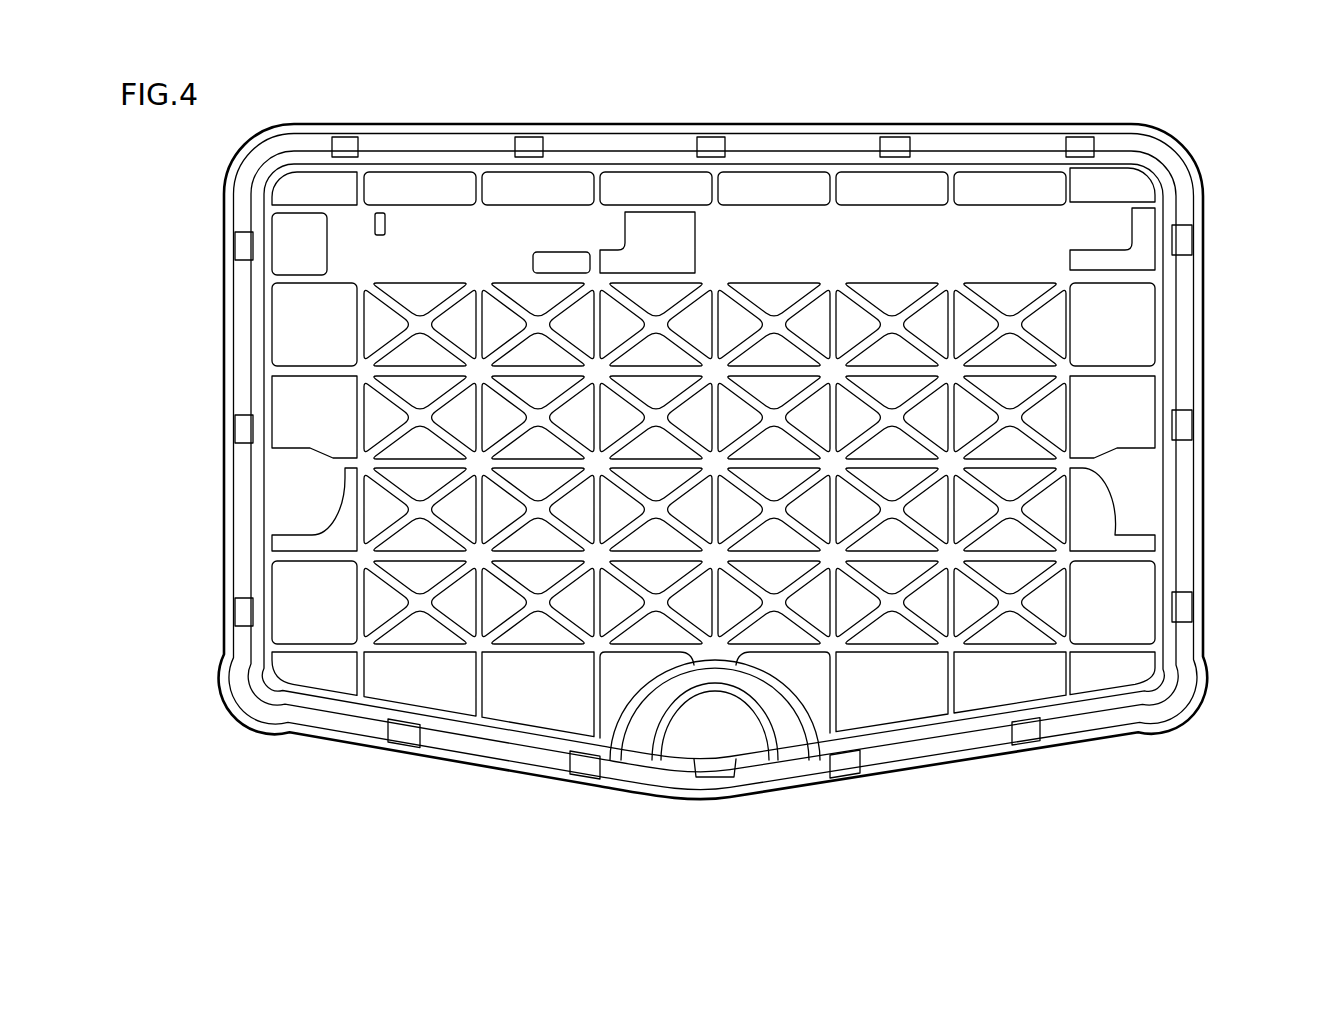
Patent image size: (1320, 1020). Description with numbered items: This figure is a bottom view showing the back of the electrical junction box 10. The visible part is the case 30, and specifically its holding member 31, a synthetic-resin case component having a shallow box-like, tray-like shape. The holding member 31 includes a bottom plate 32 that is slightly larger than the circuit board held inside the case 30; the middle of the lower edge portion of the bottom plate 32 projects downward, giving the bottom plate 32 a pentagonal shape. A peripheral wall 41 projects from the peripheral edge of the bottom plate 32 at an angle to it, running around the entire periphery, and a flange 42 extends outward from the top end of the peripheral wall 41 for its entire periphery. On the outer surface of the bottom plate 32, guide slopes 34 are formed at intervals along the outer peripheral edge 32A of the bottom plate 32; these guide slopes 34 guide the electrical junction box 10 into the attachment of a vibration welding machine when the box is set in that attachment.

The electrical junction box 10 is at (1204, 116).
The case 30 is at (297, 676).
The holding member 31 is at (317, 676).
The bottom plate 32 is at (1000, 220).
The outer peripheral edge 32A is at (422, 172).
The guide slopes 34 is at (345, 145).
The peripheral wall 41 is at (600, 143).
The flange 42 is at (704, 437).